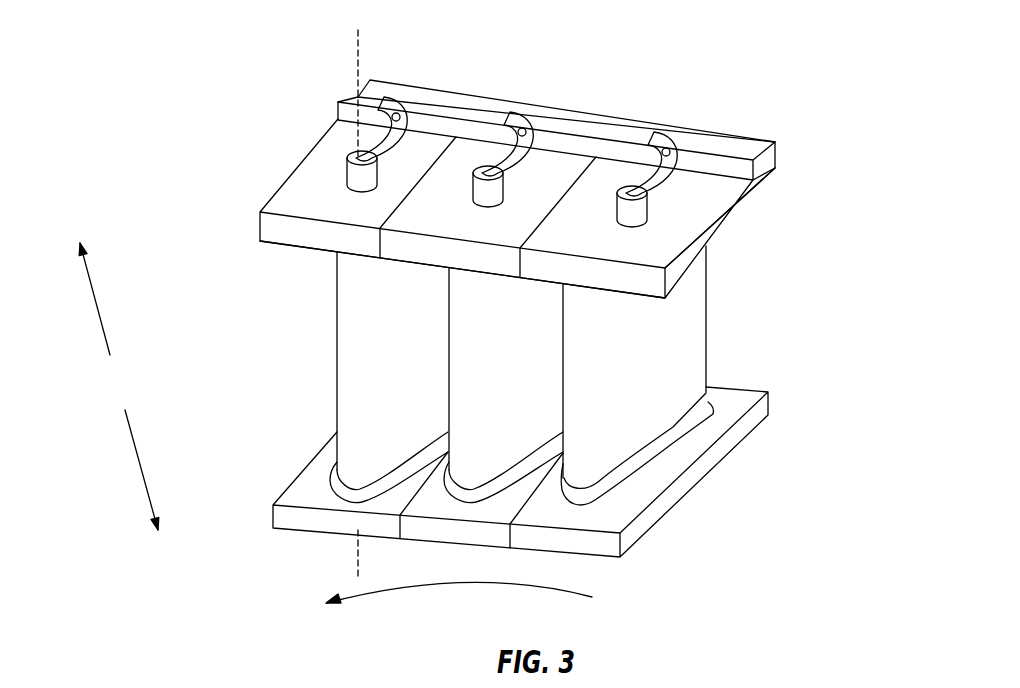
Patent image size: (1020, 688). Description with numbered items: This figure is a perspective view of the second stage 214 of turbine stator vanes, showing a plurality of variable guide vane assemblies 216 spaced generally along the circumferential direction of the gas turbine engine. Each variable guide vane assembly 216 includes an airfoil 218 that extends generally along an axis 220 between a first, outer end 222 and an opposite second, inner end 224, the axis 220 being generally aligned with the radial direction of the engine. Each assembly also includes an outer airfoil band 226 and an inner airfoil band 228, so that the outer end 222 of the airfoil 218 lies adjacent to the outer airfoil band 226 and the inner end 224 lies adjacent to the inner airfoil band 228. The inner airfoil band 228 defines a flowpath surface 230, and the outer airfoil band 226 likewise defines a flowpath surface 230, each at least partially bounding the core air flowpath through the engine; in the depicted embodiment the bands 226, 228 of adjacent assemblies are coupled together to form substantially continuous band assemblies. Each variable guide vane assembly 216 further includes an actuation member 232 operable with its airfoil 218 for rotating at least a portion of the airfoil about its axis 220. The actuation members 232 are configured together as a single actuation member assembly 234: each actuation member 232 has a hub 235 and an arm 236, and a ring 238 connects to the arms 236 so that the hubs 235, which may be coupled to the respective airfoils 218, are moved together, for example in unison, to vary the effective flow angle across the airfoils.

The second stage 214 is at (465, 322).
The variable guide vane assembly 216 is at (450, 60).
The airfoil 218 is at (693, 347).
The axis 220 is at (362, 52).
The outer end 222 is at (325, 253).
The inner end 224 is at (722, 395).
The outer airfoil band 226 is at (291, 198).
The inner airfoil band 228 is at (323, 540).
The flowpath surface 230 is at (327, 500).
The actuation member 232 is at (341, 160).
The actuation member assembly 234 is at (639, 128).
The hub 235 is at (640, 228).
The arm 236 is at (757, 176).
The ring 238 is at (483, 110).